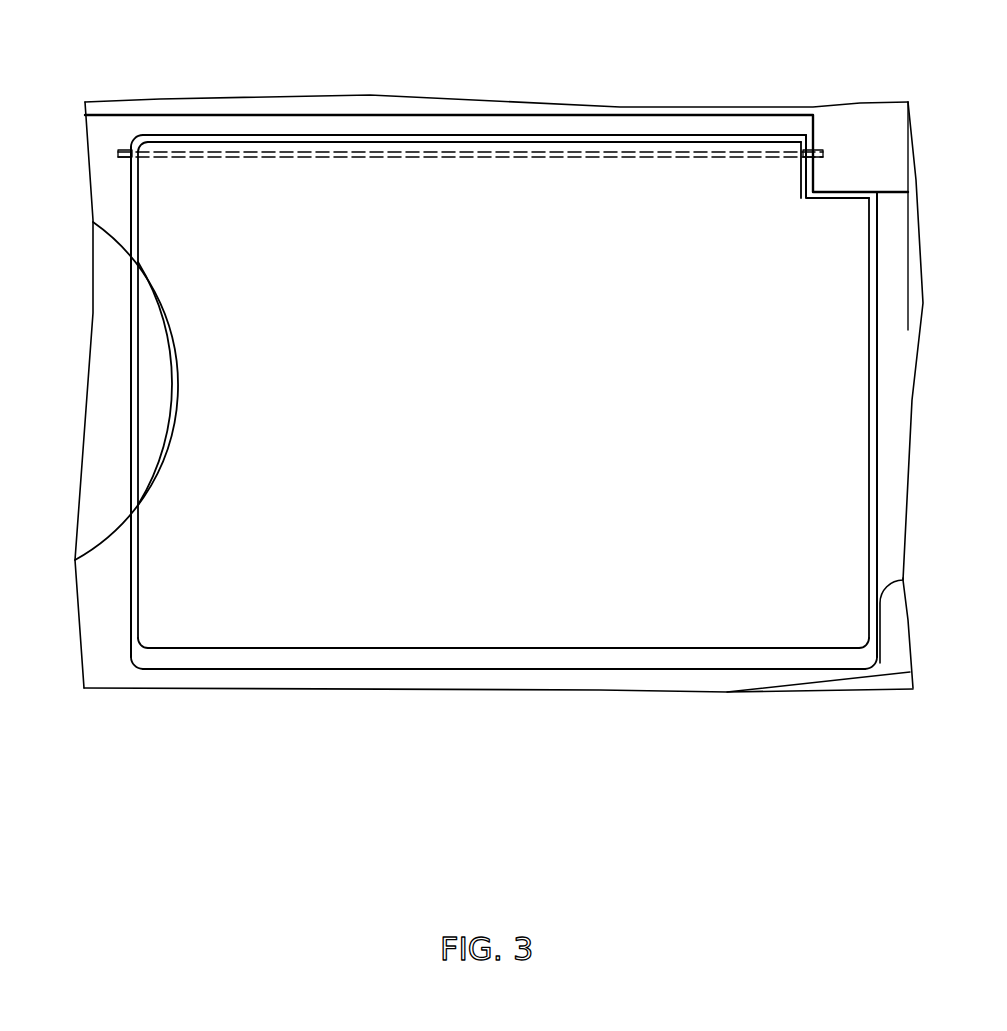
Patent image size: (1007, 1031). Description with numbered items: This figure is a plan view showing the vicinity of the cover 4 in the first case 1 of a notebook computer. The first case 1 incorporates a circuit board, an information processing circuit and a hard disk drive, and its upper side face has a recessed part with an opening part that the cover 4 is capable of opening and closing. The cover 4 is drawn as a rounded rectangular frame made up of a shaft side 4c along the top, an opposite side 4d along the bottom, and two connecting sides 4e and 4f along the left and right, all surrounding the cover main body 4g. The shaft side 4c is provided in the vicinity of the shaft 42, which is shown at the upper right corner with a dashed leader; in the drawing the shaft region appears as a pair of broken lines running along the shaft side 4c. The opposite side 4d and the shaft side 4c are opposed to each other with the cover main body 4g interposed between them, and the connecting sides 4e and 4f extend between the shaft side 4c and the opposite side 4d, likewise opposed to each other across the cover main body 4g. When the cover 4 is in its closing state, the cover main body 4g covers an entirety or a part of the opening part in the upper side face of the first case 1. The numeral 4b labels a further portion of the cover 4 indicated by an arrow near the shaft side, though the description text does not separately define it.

The first case 1 is at (785, 125).
The cover 4 is at (501, 392).
The bottom plate of frame 4b is at (327, 210).
The shaft side 4c is at (573, 138).
The opposite side 4d is at (636, 650).
The connecting side 4e is at (130, 223).
The connecting side 4f is at (871, 447).
The cover main body 4g is at (785, 510).
The shaft 42 is at (823, 153).